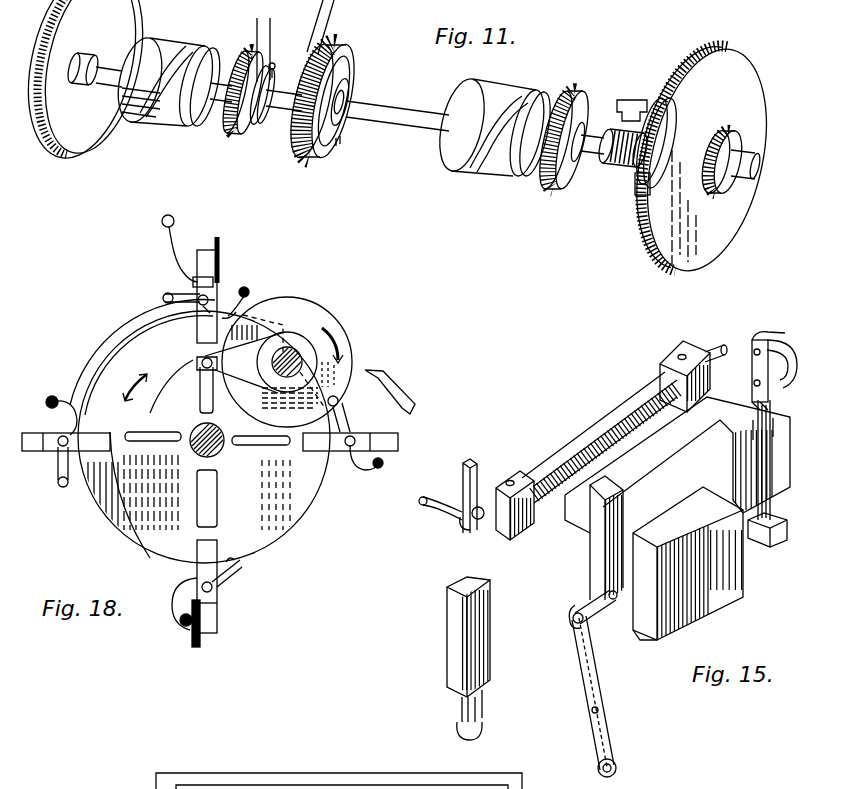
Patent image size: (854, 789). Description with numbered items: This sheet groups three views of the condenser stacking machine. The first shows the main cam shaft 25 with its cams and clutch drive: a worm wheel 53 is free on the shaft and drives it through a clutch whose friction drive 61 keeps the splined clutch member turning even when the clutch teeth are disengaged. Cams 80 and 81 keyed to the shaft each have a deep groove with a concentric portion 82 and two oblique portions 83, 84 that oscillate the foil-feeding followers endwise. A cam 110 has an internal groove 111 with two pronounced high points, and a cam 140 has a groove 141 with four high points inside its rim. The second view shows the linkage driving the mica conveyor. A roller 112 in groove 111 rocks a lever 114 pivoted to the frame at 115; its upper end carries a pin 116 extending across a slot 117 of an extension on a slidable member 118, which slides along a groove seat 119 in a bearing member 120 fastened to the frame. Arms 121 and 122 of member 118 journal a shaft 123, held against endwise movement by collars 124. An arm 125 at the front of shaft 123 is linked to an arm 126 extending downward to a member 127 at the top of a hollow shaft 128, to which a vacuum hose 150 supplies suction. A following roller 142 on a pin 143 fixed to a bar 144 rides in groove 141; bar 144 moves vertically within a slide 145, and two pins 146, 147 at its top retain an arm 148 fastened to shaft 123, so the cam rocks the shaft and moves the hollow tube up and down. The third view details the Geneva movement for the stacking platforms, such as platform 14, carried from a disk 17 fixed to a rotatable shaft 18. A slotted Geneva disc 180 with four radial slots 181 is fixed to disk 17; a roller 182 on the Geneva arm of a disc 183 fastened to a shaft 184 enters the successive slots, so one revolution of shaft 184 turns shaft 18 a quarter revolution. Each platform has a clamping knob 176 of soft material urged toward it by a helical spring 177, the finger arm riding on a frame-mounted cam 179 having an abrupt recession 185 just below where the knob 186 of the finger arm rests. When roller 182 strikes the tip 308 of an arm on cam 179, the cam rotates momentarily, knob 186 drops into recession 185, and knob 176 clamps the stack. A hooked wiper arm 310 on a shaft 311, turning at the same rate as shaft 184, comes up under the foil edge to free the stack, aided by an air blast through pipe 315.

In FIG. 11, the cam 81 is at (158, 47).
In FIG. 11, the oblique portion 83 is at (183, 52).
In FIG. 11, the oblique portion 84 is at (153, 117).
In FIG. 11, the cam 140 is at (233, 138).
In FIG. 11, the groove 141 is at (247, 131).
In FIG. 11, the bar 144 is at (264, 44).
In FIG. 15, the bar 144 is at (481, 707).
In FIG. 11, the pin 143 is at (274, 66).
In FIG. 11, the platform 14 is at (320, 30).
In FIG. 11, the cam 110 is at (305, 156).
In FIG. 11, the internal groove 111 is at (341, 143).
In FIG. 11, the main cam shaft 25 is at (391, 106).
In FIG. 11, the cam 80 is at (490, 84).
In FIG. 11, the concentric portion 82 is at (537, 90).
In FIG. 11, the friction drive 61 is at (662, 100).
In FIG. 11, the worm wheel 53 is at (716, 44).
In FIG. 18, the disk 17 is at (266, 547).
In FIG. 18, the shaft 18 is at (220, 470).
In FIG. 18, the radial slots 181 is at (263, 445).
In FIG. 18, the disc 183 is at (330, 320).
In FIG. 18, the shaft 184 is at (300, 357).
In FIG. 18, the roller 182 is at (205, 357).
In FIG. 18, the pipe 315 is at (222, 262).
In FIG. 18, the shaft 311 is at (174, 221).
In FIG. 18, the hooked wiper arm 310 is at (176, 258).
In FIG. 18, the helical spring 177 is at (236, 290).
In FIG. 18, the cam 179 is at (105, 340).
In FIG. 18, the clamping knob 176 is at (52, 402).
In FIG. 18, the Geneva disc 180 is at (178, 416).
In FIG. 18, the tip 308 is at (392, 380).
In FIG. 18, the abrupt recession 185 is at (84, 483).
In FIG. 18, the knob 186 is at (60, 484).
In FIG. 15, the slidable member 118 is at (613, 573).
In FIG. 15, the bearing member 120 is at (737, 577).
In FIG. 15, the groove seat 119 is at (657, 592).
In FIG. 15, the arm 122 is at (508, 470).
In FIG. 15, the collars 124 is at (498, 513).
In FIG. 15, the shaft 123 is at (553, 453).
In FIG. 15, the arm 121 is at (673, 353).
In FIG. 15, the arm 125 is at (757, 338).
In FIG. 15, the arm 126 is at (793, 356).
In FIG. 15, the vacuum hose 150 is at (757, 370).
In FIG. 15, the member 127 is at (757, 390).
In FIG. 15, the hollow shaft 128 is at (768, 400).
In FIG. 15, the pin 146 is at (456, 488).
In FIG. 15, the arm 148 is at (463, 533).
In FIG. 15, the pin 147 is at (431, 521).
In FIG. 15, the slide 145 is at (455, 626).
In FIG. 15, the following roller 142 is at (458, 721).
In FIG. 15, the slot 117 is at (577, 600).
In FIG. 15, the pin 116 is at (587, 621).
In FIG. 15, the lever 114 is at (594, 679).
In FIG. 15, the pivot 115 is at (600, 710).
In FIG. 15, the roller 112 is at (613, 760).